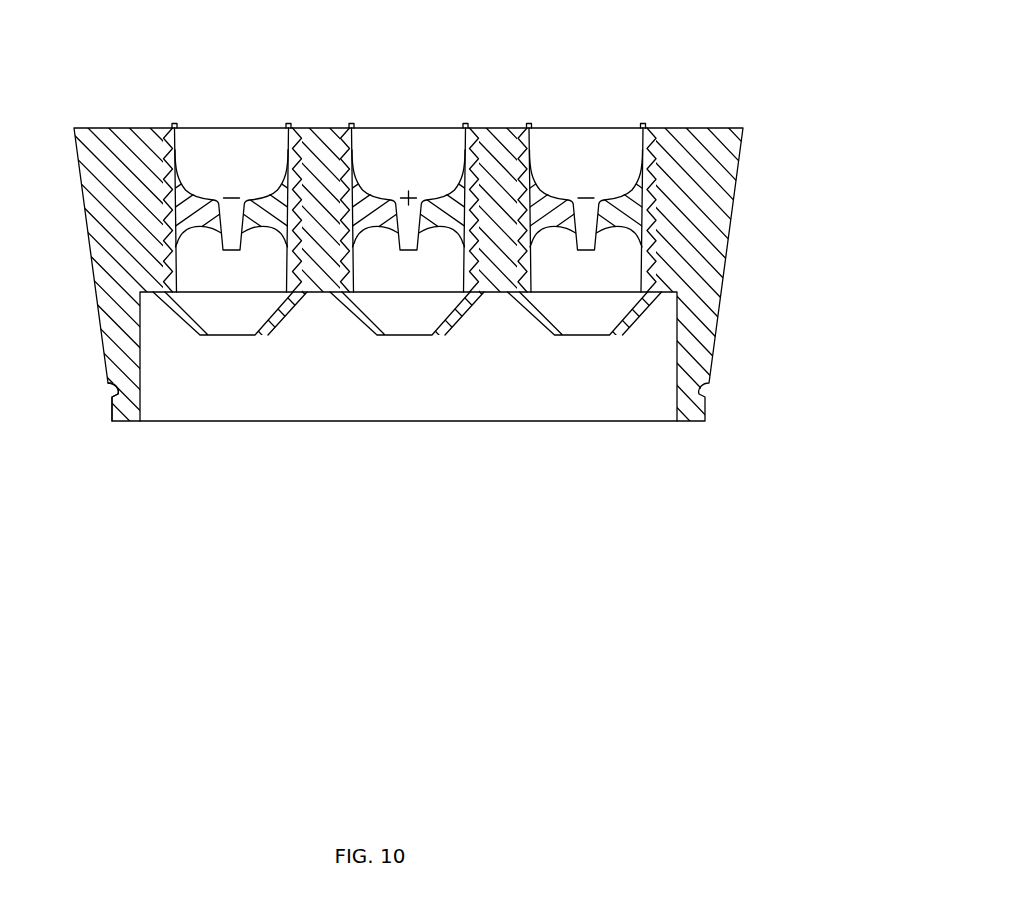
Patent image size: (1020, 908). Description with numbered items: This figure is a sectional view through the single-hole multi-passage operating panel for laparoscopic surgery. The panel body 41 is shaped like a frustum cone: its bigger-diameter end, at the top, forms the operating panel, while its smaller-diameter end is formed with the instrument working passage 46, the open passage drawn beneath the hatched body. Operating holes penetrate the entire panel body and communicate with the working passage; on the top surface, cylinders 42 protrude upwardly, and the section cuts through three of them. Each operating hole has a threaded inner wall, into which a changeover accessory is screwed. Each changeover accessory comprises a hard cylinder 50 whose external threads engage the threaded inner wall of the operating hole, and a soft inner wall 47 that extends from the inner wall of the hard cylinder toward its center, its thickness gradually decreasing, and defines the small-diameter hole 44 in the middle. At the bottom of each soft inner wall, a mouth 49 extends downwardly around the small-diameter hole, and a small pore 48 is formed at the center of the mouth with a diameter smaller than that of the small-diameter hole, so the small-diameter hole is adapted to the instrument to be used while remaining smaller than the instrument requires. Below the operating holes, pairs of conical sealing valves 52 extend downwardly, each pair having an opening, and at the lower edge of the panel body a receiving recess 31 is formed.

The receiving recess 31 is at (108, 384).
The panel body 41 is at (697, 242).
The cylinder 42 is at (173, 124).
The small-diameter hole 44 is at (409, 191).
The instrument working passage 46 is at (448, 380).
The soft inner wall 47 is at (363, 190).
The small pore 48 is at (410, 251).
The mouth 49 is at (423, 250).
The hard cylinder 50 is at (293, 124).
The valve 52 is at (277, 325).